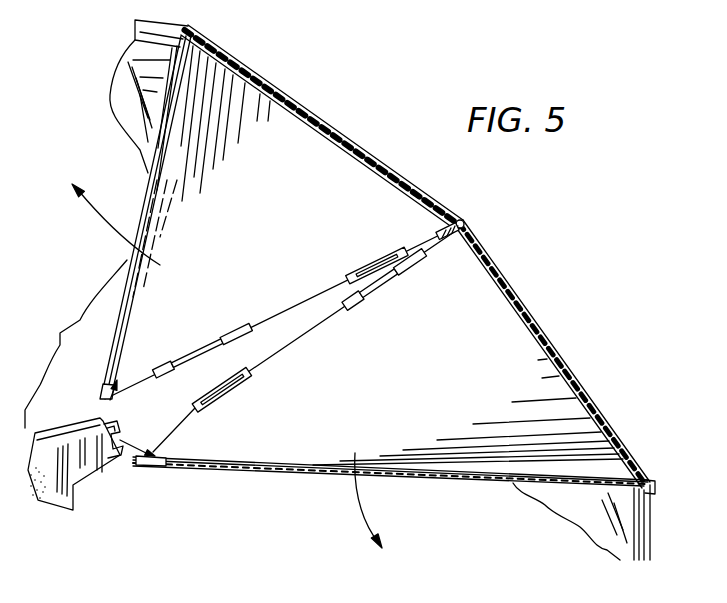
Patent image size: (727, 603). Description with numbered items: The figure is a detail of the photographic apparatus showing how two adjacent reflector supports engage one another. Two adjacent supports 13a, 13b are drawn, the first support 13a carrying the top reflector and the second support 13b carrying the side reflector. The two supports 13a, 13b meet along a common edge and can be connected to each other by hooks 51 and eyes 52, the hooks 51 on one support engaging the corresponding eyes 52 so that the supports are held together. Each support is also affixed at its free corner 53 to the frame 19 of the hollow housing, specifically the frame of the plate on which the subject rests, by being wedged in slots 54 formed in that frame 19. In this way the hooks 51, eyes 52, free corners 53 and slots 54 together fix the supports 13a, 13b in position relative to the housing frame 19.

The support 13a is at (273, 115).
The support 13b is at (474, 309).
The hook 51 is at (372, 268).
The eye 52 is at (211, 347).
The free corner 53 is at (100, 396).
The slot 54 is at (110, 424).
The frame 19 is at (87, 468).